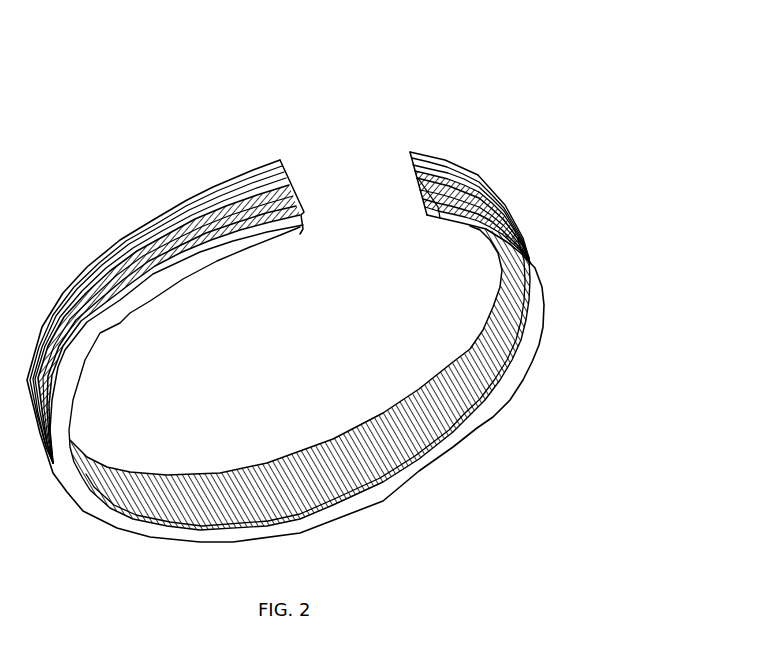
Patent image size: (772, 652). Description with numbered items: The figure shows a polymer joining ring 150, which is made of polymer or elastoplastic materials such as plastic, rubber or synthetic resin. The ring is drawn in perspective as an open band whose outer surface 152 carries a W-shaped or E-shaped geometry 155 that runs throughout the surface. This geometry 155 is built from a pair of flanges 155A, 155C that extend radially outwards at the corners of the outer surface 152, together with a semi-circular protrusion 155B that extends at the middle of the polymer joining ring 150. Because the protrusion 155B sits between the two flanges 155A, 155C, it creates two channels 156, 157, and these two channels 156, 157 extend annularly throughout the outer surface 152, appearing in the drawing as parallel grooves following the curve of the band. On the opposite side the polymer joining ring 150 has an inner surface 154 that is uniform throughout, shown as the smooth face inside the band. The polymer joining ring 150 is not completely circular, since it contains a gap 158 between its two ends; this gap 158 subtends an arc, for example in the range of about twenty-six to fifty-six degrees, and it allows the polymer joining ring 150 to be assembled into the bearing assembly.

The polymer joining ring 150 is at (118, 75).
The outer surface 152 is at (162, 224).
The inner surface 154 is at (386, 463).
The W-shaped or E-shaped geometry 155 is at (407, 155).
The flange 155A is at (523, 245).
The semi-circular protrusion 155B is at (480, 200).
The flange 155C is at (440, 157).
The channel 156 is at (244, 222).
The channel 157 is at (267, 183).
The gap 158 is at (340, 192).